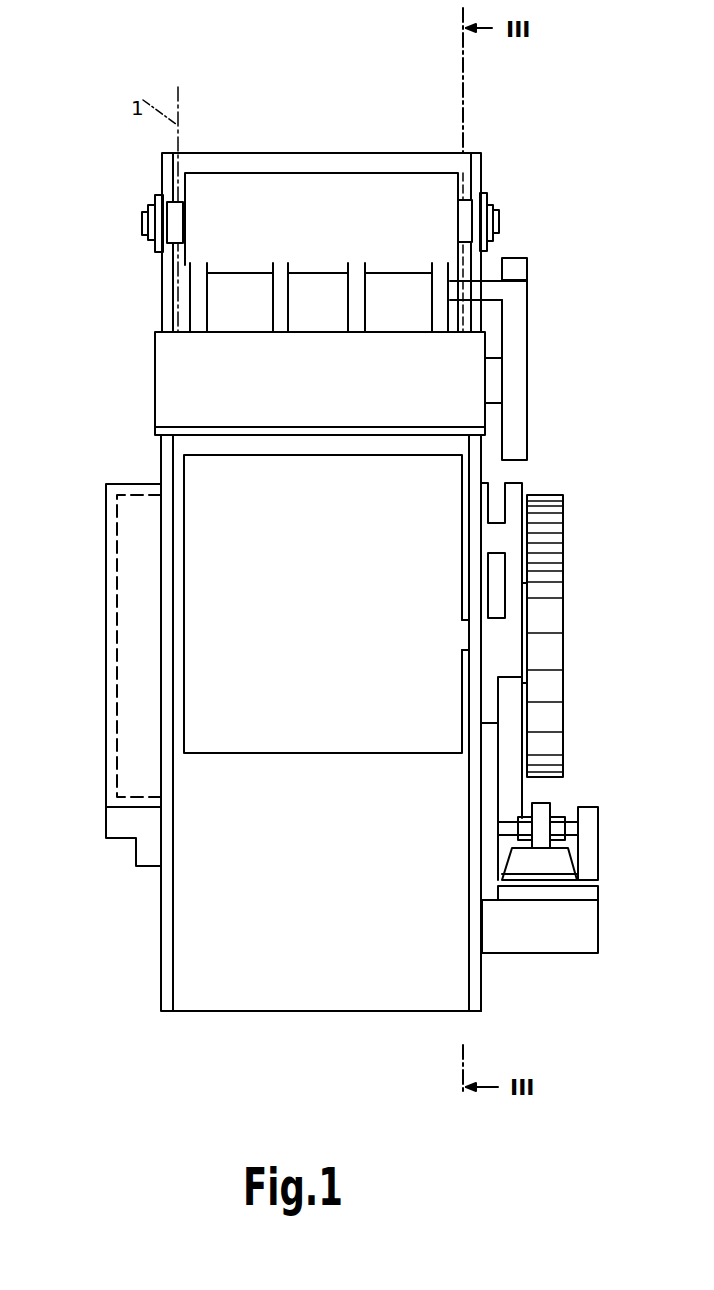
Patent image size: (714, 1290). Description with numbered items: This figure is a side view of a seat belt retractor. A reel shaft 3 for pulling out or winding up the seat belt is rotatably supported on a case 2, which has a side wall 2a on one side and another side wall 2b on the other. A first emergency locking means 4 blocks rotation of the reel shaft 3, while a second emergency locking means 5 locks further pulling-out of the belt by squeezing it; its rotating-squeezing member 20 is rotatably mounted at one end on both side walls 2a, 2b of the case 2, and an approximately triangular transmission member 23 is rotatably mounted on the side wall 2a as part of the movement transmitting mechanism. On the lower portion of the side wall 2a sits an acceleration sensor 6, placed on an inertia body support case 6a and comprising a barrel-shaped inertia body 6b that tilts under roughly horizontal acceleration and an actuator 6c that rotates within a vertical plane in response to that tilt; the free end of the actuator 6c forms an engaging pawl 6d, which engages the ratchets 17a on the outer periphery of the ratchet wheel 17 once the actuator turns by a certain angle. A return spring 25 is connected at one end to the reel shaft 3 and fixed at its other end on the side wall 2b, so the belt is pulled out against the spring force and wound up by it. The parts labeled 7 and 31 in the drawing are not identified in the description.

The case 2 is at (230, 1001).
The side wall 2a is at (483, 984).
The other side wall 2b is at (160, 913).
The reel shaft 3 is at (461, 626).
The first emergency locking means 4 is at (570, 647).
The second emergency locking means 5 is at (514, 242).
The acceleration sensor 6 is at (598, 938).
The inertia body support case 6a is at (592, 891).
The barrel-shaped inertia body 6b is at (505, 864).
The actuator 6c is at (566, 839).
The engaging pawl 6d is at (547, 800).
The fastening nut 7 is at (157, 234).
The ratchet wheel 17 is at (562, 531).
The ratchets 17a is at (562, 596).
The rotating-squeezing member 20 is at (326, 173).
The transmission member 23 is at (521, 350).
The return spring 25 is at (118, 543).
The roller bearing block 31 is at (182, 220).